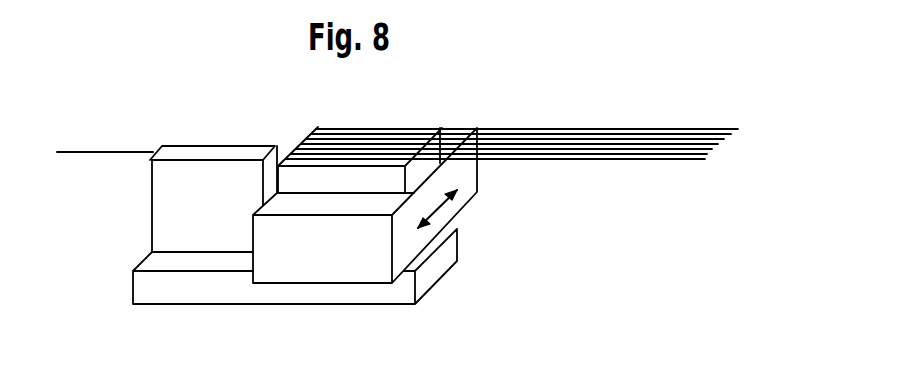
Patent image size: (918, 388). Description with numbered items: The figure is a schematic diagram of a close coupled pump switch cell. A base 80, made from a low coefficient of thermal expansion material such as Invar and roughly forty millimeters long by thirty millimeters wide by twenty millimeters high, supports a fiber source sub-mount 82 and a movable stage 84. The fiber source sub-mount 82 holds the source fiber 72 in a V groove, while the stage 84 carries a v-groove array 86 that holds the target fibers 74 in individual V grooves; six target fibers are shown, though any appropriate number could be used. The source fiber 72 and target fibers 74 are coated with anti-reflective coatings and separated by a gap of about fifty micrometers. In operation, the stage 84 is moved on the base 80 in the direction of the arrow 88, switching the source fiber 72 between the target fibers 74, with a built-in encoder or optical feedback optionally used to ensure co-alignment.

The source fiber 72 is at (90, 156).
The target fibers 74 is at (653, 160).
The base 80 is at (175, 293).
The fiber source sub-mount 82 is at (160, 212).
The movable stage 84 is at (323, 273).
The v-groove array 86 is at (320, 127).
The arrow 88 is at (435, 213).